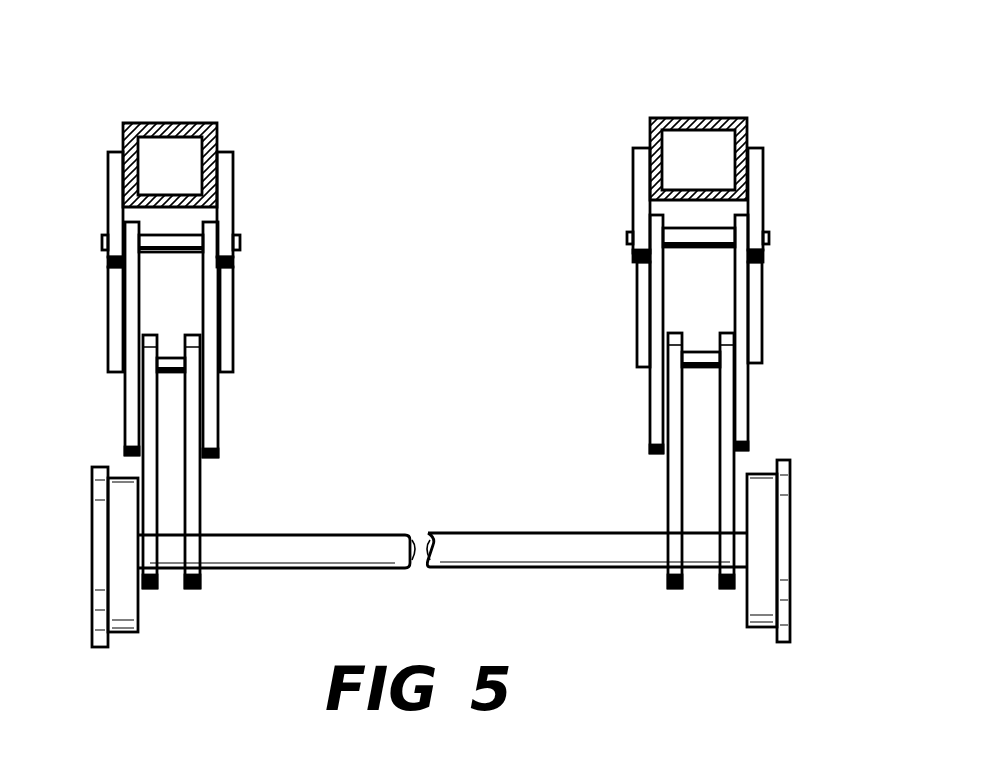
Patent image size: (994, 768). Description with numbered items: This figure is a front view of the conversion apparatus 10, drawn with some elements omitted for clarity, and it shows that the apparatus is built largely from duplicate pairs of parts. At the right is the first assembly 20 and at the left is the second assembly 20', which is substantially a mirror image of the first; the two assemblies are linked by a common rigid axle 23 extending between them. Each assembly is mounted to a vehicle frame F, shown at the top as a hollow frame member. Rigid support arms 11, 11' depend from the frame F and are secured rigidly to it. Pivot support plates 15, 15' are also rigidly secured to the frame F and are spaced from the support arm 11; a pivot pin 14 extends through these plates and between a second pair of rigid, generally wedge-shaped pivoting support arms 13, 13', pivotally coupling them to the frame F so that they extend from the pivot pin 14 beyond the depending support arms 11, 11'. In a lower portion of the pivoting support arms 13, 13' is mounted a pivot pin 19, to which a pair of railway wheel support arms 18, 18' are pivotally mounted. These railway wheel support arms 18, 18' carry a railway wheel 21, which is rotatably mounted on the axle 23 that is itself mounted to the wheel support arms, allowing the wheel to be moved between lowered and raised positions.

The conversion apparatus 10 is at (432, 623).
The first assembly 20 is at (687, 329).
The second assembly 20' is at (166, 352).
The vehicle frame F is at (697, 118).
The pivot support plate 15 is at (609, 205).
The pivot support plate 15' is at (792, 205).
The rigid support arm 11 is at (607, 299).
The rigid support arm 11' is at (792, 297).
The pivoting support arm 13 is at (630, 334).
The pivoting support arm 13' is at (777, 332).
The pivot pin 14 is at (697, 232).
The pivot pin 19 is at (702, 367).
The railway wheel support arm 18 is at (634, 460).
The railway wheel support arm 18' is at (771, 460).
The railway wheel 21 is at (785, 528).
The axle 23 is at (507, 502).